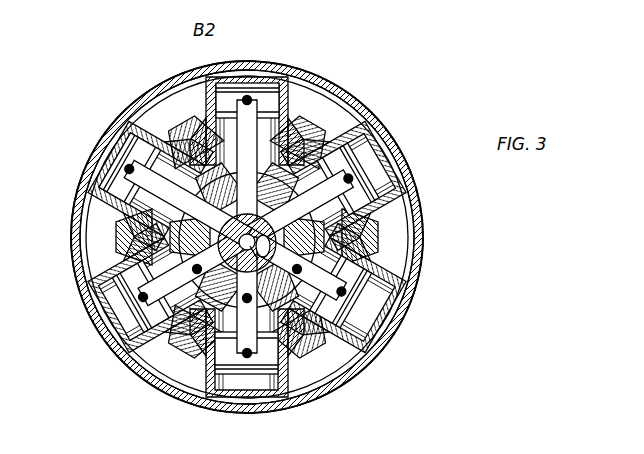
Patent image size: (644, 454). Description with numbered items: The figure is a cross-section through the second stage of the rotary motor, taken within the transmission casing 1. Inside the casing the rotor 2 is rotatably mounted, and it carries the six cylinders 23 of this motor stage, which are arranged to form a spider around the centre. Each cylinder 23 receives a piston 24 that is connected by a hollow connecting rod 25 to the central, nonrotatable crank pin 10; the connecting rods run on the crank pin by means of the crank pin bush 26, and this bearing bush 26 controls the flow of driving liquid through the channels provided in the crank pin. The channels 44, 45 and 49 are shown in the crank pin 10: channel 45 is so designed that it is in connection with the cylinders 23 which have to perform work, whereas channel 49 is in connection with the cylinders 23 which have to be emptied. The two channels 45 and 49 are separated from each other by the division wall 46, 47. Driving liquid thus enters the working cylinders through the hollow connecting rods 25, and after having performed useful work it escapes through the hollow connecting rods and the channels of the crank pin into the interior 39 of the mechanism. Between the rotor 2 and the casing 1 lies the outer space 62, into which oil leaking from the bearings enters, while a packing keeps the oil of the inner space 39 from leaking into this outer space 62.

The transmission casing 1 is at (150, 97).
The rotor 2 is at (362, 232).
The crank pin 10 is at (255, 248).
The cylinders 23 is at (262, 73).
The pistons 24 is at (303, 68).
The hollow connecting rods 25 is at (298, 123).
The crank pin bush 26 is at (380, 136).
The interior 39 is at (218, 187).
The channel 44 is at (303, 327).
The channel 45 is at (327, 270).
The division wall 46 is at (220, 338).
The division wall 47 is at (275, 187).
The channel 49 is at (192, 330).
The outer space 62 is at (181, 109).